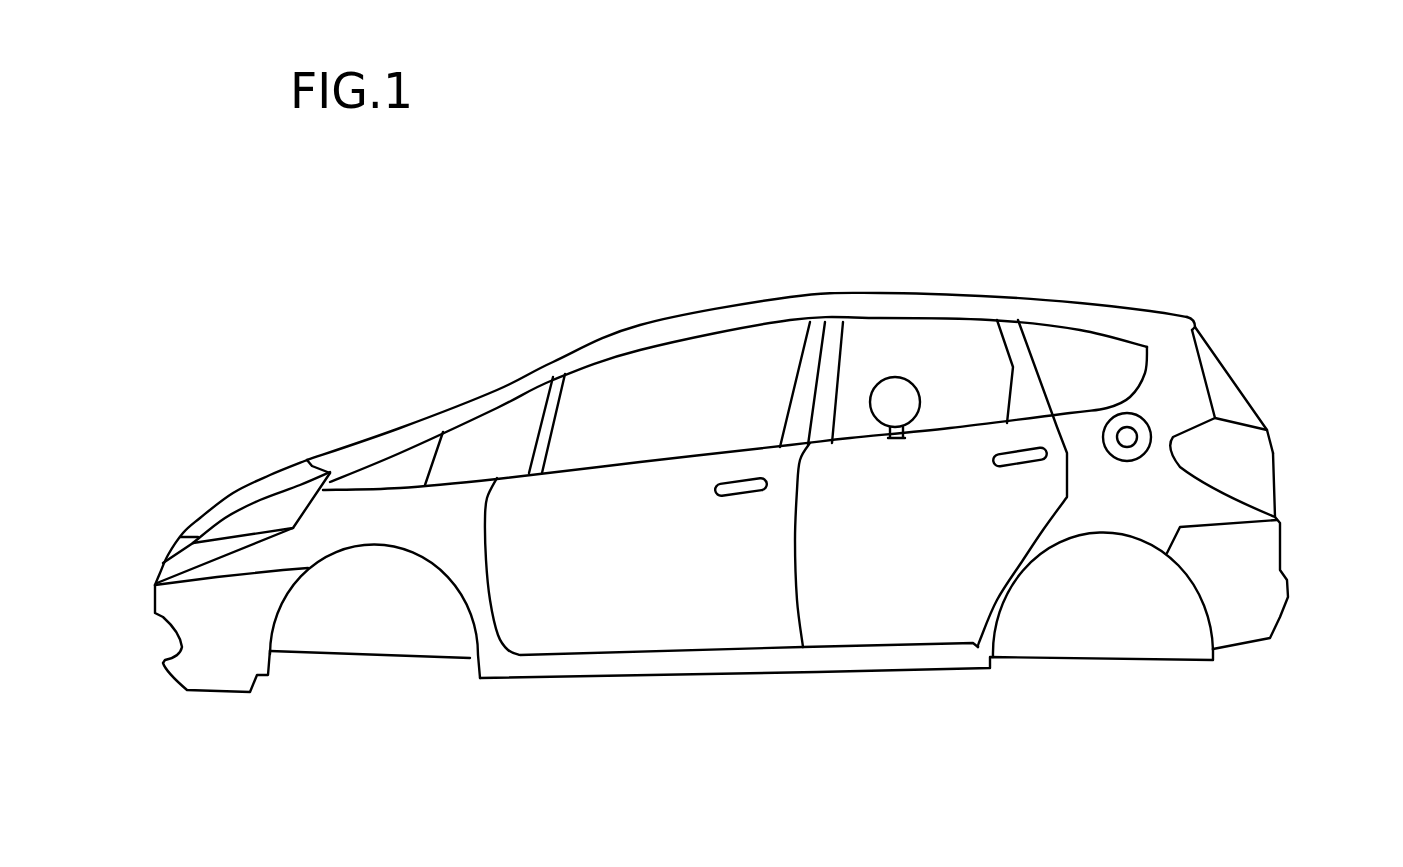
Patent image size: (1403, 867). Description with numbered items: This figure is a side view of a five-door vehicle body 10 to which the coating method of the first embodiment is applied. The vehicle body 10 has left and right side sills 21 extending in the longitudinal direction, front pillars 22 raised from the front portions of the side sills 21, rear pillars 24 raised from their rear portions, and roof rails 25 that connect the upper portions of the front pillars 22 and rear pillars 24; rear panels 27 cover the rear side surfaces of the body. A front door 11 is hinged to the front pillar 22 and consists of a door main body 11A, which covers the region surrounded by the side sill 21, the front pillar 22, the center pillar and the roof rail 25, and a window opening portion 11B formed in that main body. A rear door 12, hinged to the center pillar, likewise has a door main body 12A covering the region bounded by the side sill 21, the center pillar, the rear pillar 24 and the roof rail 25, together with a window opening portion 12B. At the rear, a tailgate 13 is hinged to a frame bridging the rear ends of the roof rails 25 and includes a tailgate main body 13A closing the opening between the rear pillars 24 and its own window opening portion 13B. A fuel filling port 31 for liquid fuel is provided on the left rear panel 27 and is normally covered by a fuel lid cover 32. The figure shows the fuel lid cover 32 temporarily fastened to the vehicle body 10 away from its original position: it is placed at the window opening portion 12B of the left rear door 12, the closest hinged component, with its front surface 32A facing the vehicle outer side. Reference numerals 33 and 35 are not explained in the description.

The vehicle body 10 is at (246, 463).
The front door 11 is at (641, 420).
The door main body 11A is at (587, 496).
The window opening portion 11B is at (592, 372).
The rear door 12 is at (868, 387).
The door main body 12A is at (827, 472).
The window opening portion 12B is at (844, 344).
The tailgate 13 is at (1278, 463).
The tailgate main body 13A is at (1257, 445).
The window opening portion 13B is at (1230, 360).
The side sill 21 is at (662, 665).
The front pillar 22 is at (427, 423).
The rear pillar 24 is at (1165, 337).
The roof rail 25 is at (973, 303).
The rear panel 27 is at (1158, 515).
The fuel filling port 31 is at (1120, 420).
The fuel lid cover 32 is at (930, 290).
The front surface 32A is at (908, 397).
The mirror base 33 is at (888, 433).
The door mirror unit 35 is at (923, 274).